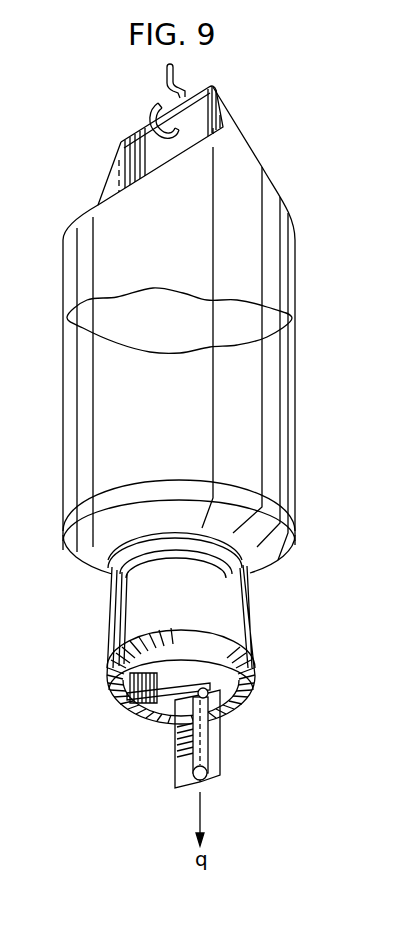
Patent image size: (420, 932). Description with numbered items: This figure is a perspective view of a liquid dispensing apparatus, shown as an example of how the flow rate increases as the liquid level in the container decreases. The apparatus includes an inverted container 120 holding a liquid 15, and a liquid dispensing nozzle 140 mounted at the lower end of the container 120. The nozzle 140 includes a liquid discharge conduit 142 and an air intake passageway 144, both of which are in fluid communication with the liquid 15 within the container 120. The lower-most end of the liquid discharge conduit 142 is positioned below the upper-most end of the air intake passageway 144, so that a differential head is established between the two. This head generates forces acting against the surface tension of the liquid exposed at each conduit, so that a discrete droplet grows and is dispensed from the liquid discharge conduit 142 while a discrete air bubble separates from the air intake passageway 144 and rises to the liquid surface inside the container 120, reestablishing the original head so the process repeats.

The inverted container 120 is at (297, 231).
The liquid 15 is at (190, 419).
The liquid dispensing nozzle 140 is at (263, 633).
The liquid discharge conduit 142 is at (168, 726).
The air intake passageway 144 is at (165, 713).